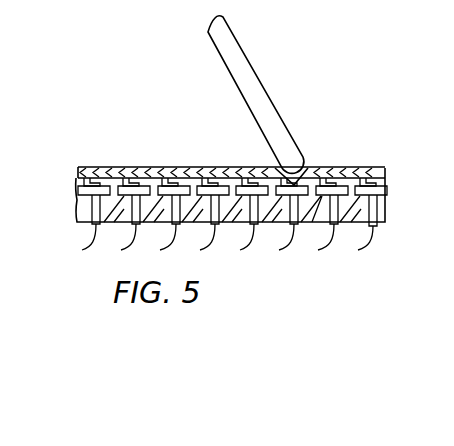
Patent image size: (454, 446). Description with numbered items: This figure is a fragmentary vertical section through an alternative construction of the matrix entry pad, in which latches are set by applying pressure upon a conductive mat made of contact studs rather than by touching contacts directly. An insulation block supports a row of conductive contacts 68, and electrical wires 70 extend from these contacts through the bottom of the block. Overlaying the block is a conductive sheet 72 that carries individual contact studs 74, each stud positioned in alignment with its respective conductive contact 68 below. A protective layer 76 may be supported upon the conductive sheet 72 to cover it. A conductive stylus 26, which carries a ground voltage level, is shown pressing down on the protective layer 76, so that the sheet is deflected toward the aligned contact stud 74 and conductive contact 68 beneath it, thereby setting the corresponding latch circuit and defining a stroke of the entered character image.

The conductive stylus 26 is at (247, 82).
The protective layer 76 is at (367, 168).
The conductive sheet 72 is at (383, 178).
The contact studs 74 is at (383, 192).
The conductive contacts 68 is at (371, 226).
The electrical wires 70 is at (363, 240).